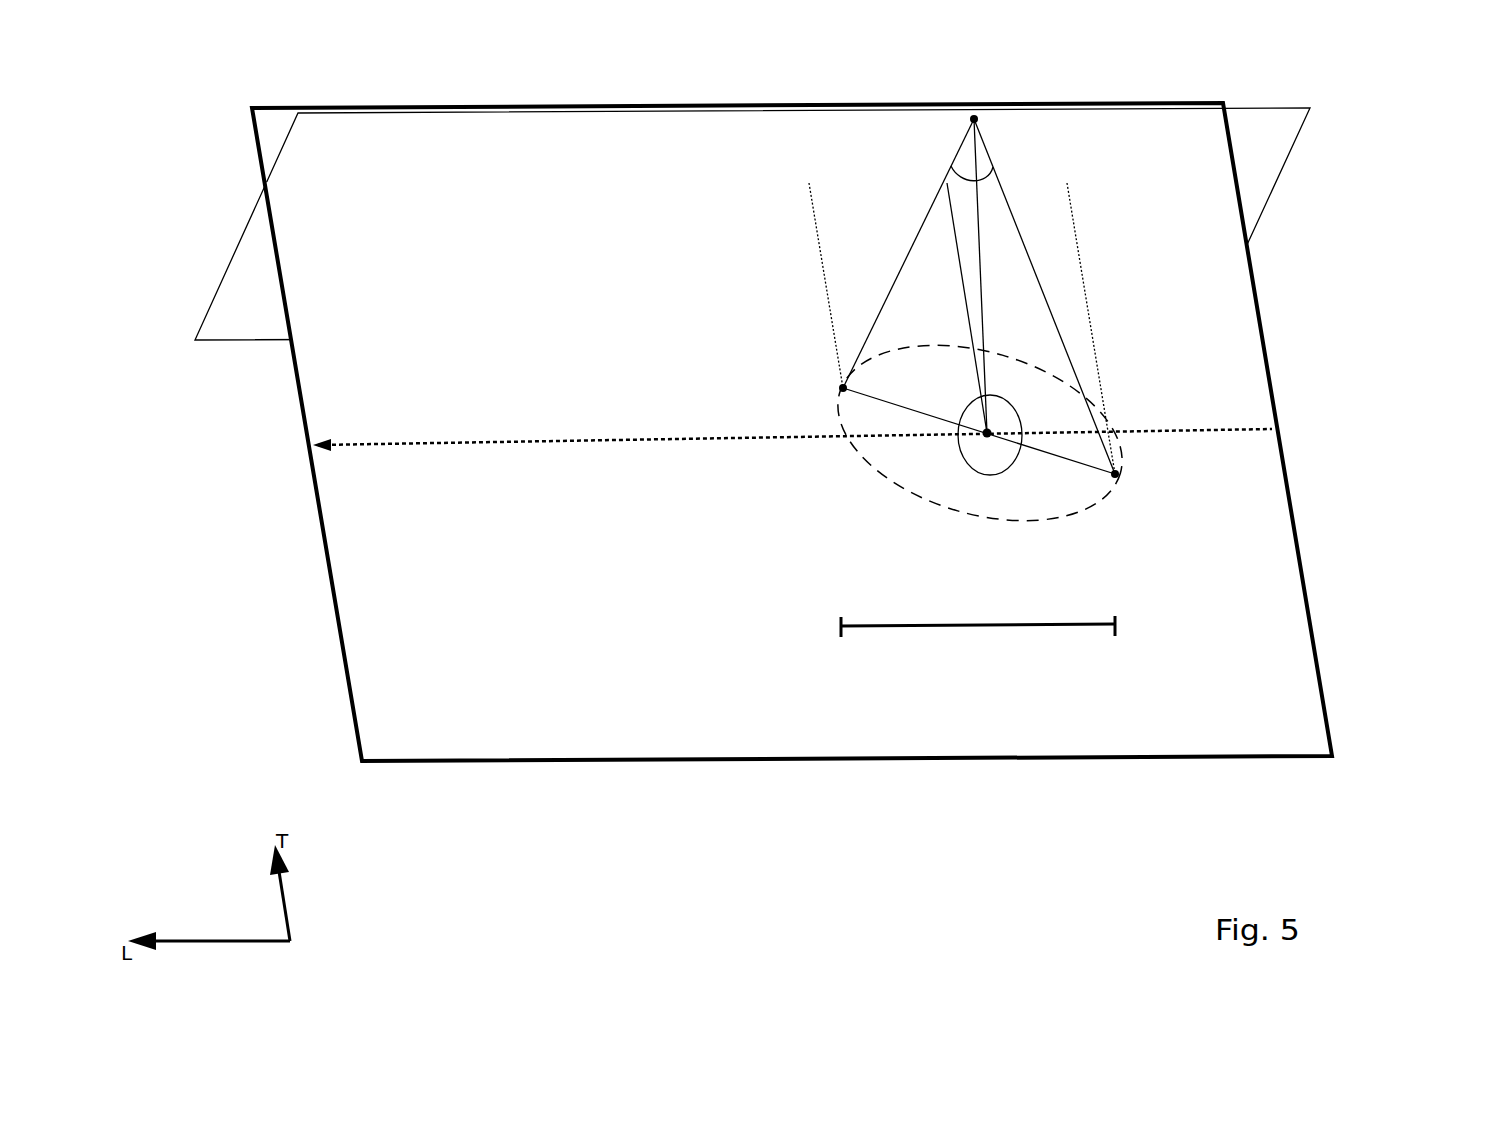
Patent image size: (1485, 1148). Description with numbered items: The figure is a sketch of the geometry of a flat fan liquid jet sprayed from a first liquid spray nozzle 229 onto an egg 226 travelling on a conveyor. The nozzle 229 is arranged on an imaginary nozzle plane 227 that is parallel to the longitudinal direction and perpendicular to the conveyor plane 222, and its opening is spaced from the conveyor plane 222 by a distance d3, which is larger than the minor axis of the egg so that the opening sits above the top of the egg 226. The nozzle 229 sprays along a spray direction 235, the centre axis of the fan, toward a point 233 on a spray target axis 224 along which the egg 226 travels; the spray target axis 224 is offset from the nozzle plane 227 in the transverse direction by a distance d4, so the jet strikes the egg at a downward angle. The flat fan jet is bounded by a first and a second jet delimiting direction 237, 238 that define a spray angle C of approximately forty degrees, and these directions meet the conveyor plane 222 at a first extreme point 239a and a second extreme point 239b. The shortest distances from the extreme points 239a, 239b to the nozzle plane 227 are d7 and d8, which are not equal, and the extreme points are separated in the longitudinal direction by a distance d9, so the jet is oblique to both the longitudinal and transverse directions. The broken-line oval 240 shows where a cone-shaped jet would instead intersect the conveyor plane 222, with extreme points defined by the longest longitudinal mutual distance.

The conveyor plane 222 is at (1242, 335).
The spray target axis 224 is at (1267, 428).
The egg 226 is at (990, 447).
The nozzle plane 227 is at (1275, 157).
The first liquid spray nozzle 229 is at (975, 116).
The point on spray target axis 233 is at (1010, 409).
The spray direction 235 is at (999, 276).
The first jet delimiting direction 237 is at (908, 253).
The second jet delimiting direction 238 is at (1044, 296).
The first extreme point 239a is at (814, 397).
The second extreme point 239b is at (1143, 486).
The oval 240 is at (878, 463).
The distance d3 is at (957, 148).
The distance d4 is at (959, 308).
The distance d7 is at (814, 285).
The distance d8 is at (1100, 328).
The distance d9 is at (978, 644).
The spray angle C is at (982, 172).